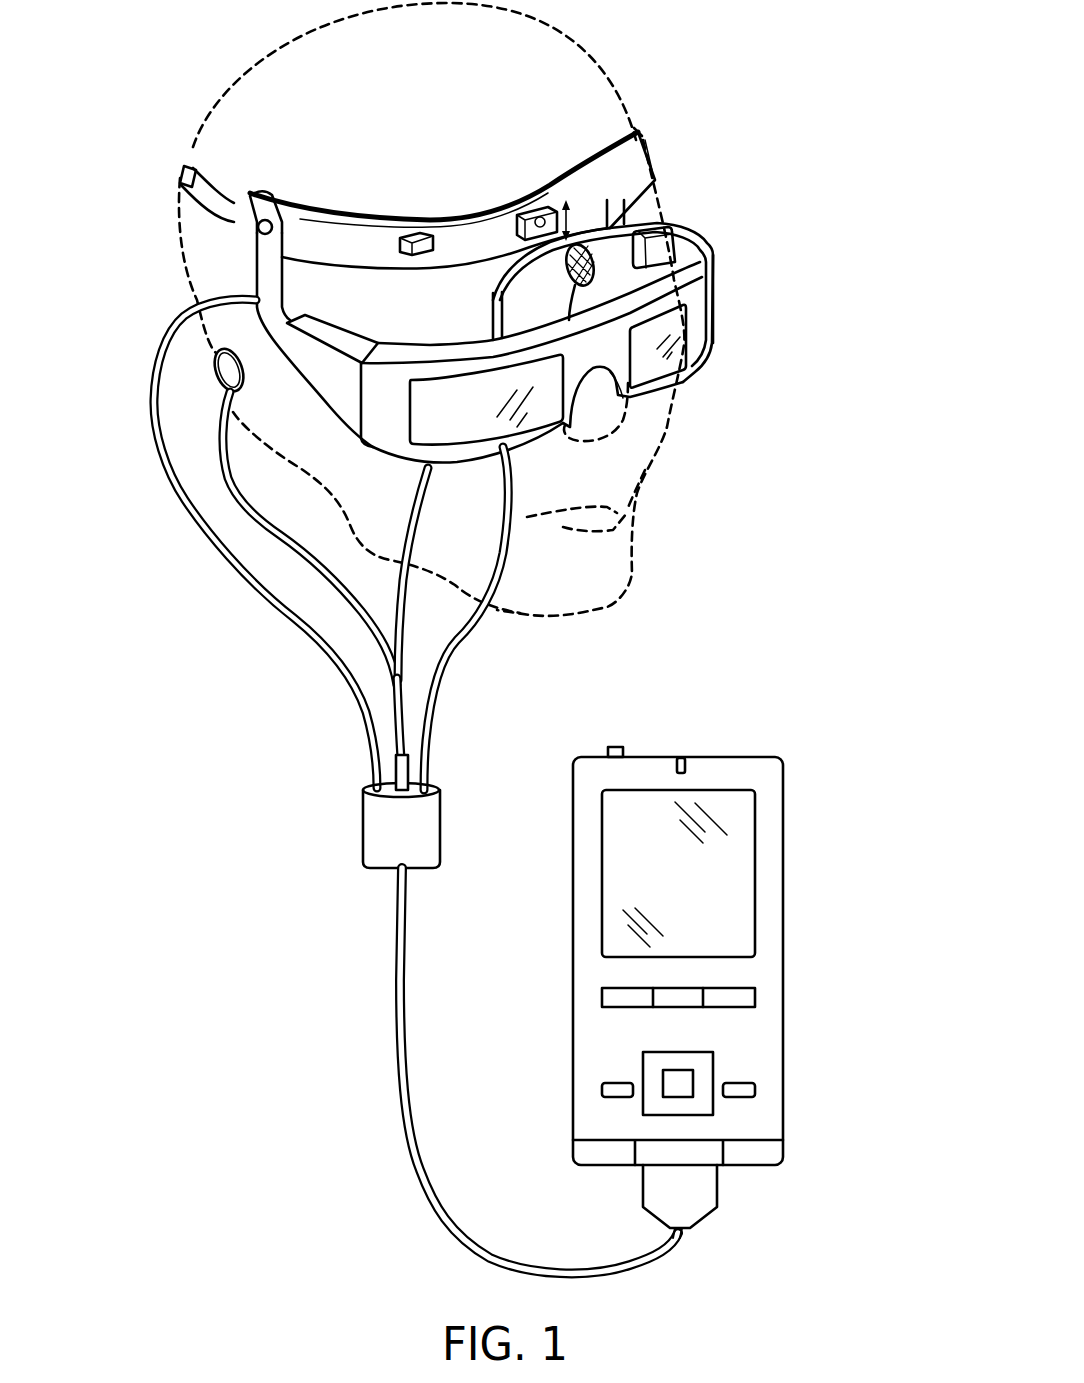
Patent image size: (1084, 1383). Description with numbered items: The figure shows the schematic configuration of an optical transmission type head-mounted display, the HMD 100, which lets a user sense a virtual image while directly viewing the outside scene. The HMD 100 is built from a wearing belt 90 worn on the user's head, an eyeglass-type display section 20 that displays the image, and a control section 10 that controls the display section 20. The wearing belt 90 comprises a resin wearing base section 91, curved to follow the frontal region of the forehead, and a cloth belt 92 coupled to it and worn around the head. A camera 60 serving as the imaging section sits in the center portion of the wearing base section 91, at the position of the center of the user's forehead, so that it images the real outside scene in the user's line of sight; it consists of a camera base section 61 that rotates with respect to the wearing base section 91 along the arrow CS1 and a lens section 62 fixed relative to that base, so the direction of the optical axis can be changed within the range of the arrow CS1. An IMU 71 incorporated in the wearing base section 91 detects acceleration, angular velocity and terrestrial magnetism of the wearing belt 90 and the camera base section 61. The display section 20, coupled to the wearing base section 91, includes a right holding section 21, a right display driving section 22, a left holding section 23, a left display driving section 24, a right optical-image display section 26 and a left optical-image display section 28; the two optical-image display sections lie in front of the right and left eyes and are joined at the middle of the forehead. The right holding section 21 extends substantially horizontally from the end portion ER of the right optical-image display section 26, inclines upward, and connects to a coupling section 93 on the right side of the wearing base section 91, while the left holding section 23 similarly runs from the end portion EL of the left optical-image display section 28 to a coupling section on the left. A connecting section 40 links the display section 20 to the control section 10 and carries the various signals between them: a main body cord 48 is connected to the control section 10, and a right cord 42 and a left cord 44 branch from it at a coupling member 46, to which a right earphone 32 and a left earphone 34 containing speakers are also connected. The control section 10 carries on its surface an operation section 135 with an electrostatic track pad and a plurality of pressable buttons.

The HMD 100 is at (795, 47).
The control section 10 is at (713, 956).
The display section 20 is at (486, 333).
The right holding section 21 is at (309, 390).
The right display driving section 22 is at (343, 328).
The left holding section 23 is at (691, 208).
The left display driving section 24 is at (653, 231).
The right optical-image display section 26 is at (460, 433).
The left optical-image display section 28 is at (697, 347).
The right earphone 32 is at (217, 368).
The left earphone 34 is at (570, 272).
The connecting section 40 is at (416, 786).
The right cord 42 is at (256, 604).
The left cord 44 is at (470, 637).
The coupling member 46 is at (428, 823).
The main body cord 48 is at (400, 1027).
The camera 60 is at (535, 157).
The camera base section 61 is at (517, 218).
The lens section 62 is at (538, 217).
The IMU 71 is at (410, 233).
The wearing belt 90 is at (417, 185).
The wearing base section 91 is at (634, 134).
The belt 92 is at (190, 172).
The coupling section 93 is at (262, 229).
The operation section 135 is at (755, 973).
The end portion ER is at (383, 437).
The end portion EL is at (712, 296).
The arrow CS1 is at (568, 205).